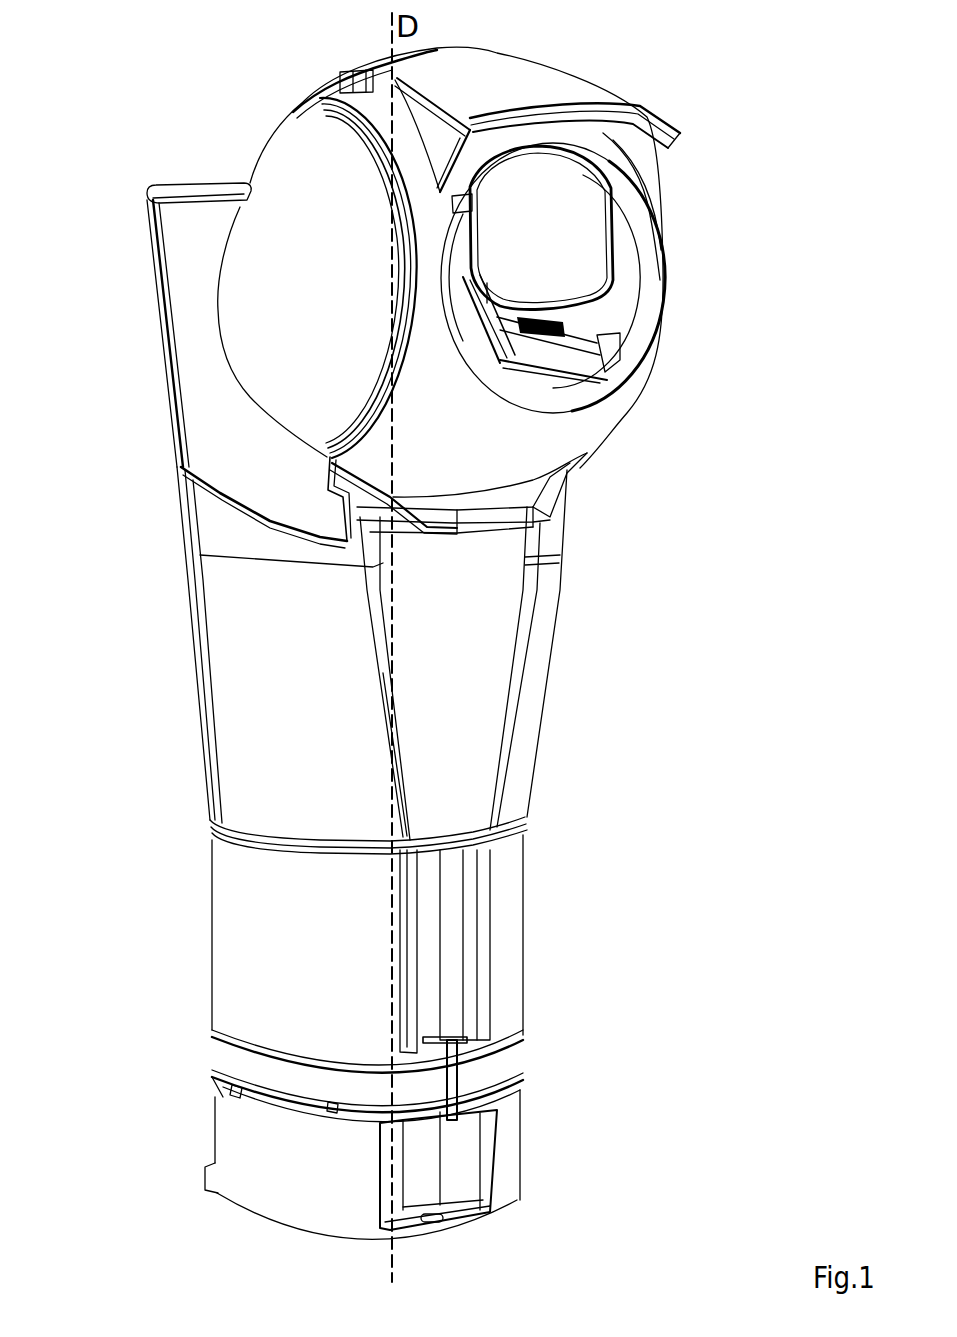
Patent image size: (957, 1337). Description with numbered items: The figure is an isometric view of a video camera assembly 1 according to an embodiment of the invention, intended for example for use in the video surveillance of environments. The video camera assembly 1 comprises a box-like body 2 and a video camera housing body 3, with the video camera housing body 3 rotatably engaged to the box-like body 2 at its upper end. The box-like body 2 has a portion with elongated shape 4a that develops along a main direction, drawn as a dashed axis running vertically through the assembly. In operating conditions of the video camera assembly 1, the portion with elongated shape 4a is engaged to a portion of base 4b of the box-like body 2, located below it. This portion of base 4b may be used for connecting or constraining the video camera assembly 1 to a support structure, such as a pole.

The video camera assembly 1 is at (110, 53).
The box-like body 2 is at (546, 847).
The video camera housing body 3 is at (594, 438).
The portion with elongated shape 4a is at (243, 730).
The portion of base 4b is at (245, 944).